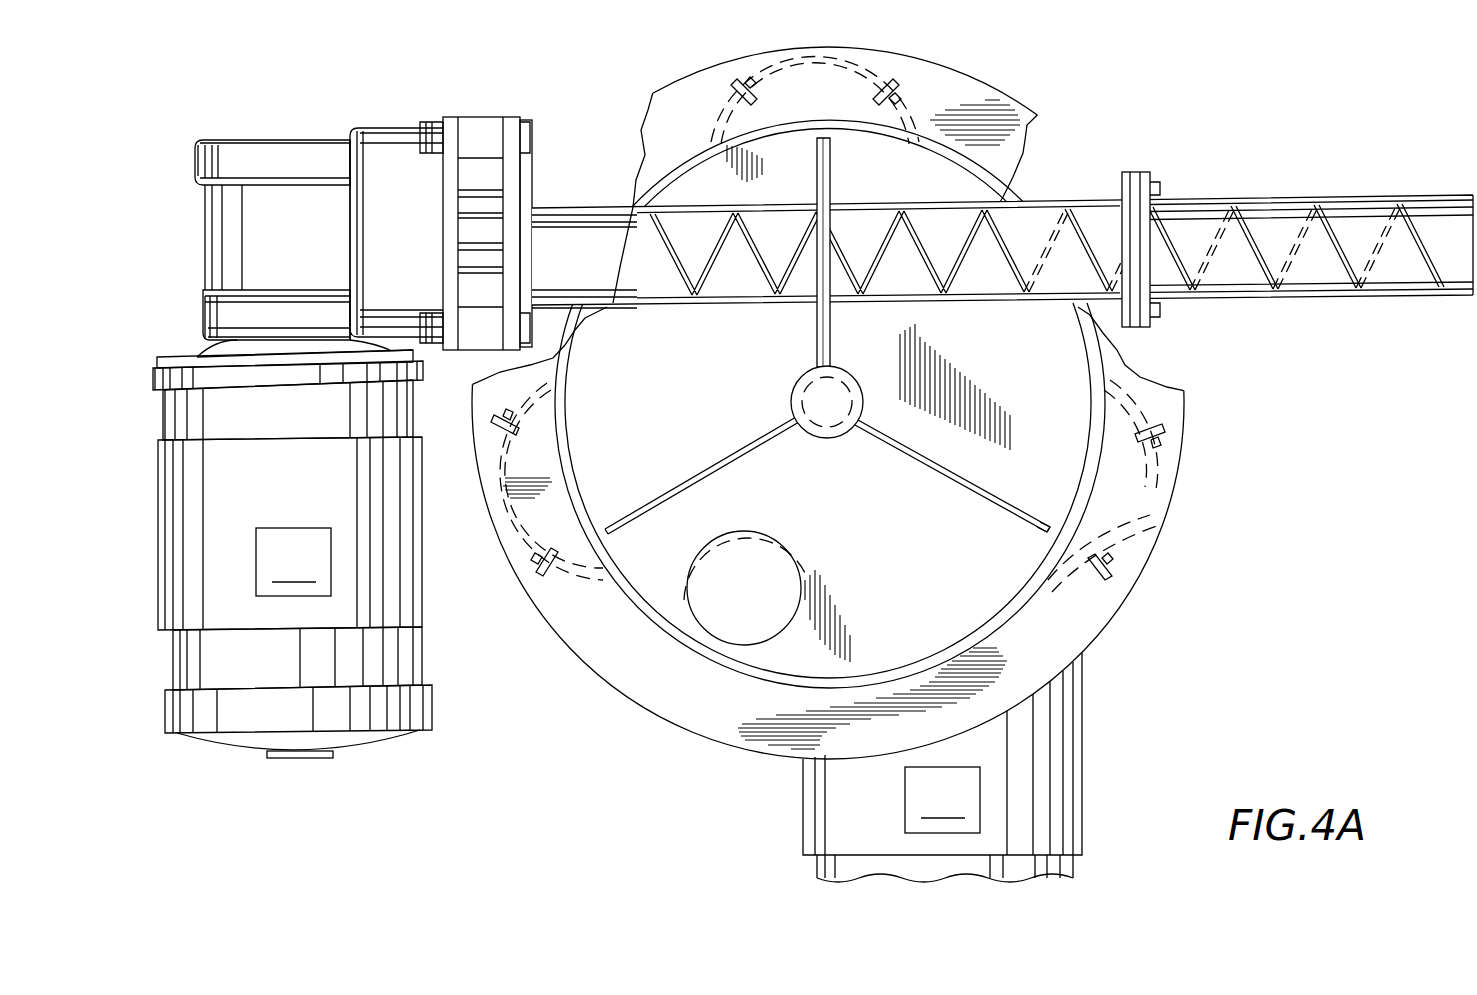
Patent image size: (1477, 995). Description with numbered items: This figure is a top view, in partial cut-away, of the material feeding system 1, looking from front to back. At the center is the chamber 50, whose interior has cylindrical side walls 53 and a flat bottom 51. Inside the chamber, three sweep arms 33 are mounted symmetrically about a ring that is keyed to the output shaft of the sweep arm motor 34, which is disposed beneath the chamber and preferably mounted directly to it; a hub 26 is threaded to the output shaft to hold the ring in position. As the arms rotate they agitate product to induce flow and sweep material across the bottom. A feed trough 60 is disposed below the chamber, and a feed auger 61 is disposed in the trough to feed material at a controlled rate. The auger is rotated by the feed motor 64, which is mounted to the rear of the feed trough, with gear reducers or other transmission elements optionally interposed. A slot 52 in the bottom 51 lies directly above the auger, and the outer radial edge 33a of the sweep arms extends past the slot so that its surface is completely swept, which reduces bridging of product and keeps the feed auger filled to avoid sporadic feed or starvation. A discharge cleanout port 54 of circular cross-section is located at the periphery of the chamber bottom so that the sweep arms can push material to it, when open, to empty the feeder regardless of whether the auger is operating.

The material feeding system 1 is at (1168, 94).
The hub 26 is at (862, 398).
The sweep arms 33 is at (717, 430).
The outer radial edge 33a is at (1070, 523).
The sweep arm motor 34 is at (1083, 800).
The chamber 50 is at (968, 595).
The bottom 51 is at (1060, 480).
The slot 52 is at (1010, 200).
The cylindrical side walls 53 is at (944, 173).
The discharge cleanout port 54 is at (707, 603).
The feed trough 60 is at (1065, 200).
The feed auger 61 is at (1353, 290).
The feed motor 64 is at (423, 557).